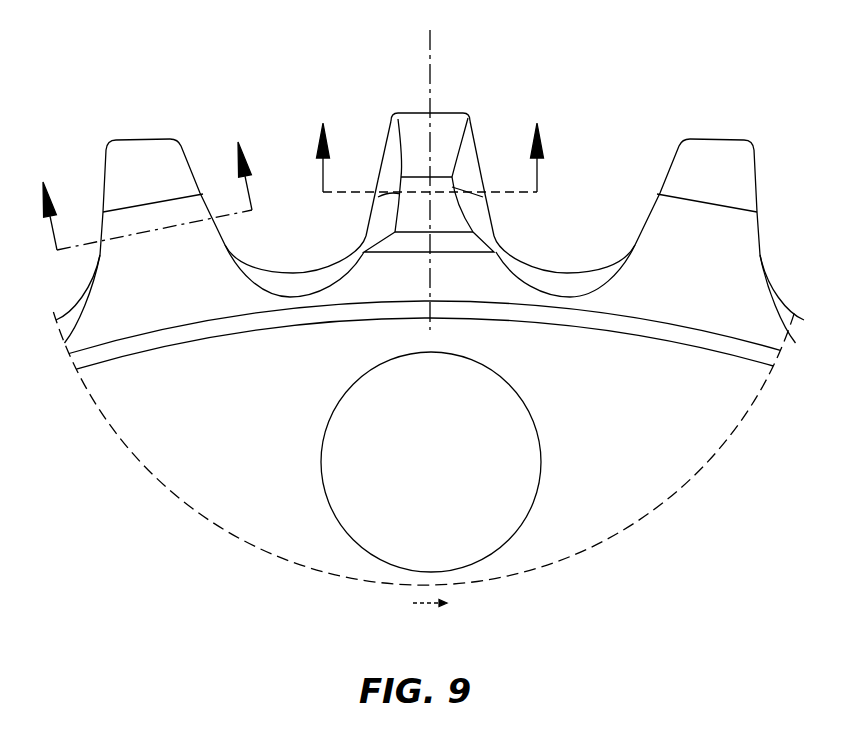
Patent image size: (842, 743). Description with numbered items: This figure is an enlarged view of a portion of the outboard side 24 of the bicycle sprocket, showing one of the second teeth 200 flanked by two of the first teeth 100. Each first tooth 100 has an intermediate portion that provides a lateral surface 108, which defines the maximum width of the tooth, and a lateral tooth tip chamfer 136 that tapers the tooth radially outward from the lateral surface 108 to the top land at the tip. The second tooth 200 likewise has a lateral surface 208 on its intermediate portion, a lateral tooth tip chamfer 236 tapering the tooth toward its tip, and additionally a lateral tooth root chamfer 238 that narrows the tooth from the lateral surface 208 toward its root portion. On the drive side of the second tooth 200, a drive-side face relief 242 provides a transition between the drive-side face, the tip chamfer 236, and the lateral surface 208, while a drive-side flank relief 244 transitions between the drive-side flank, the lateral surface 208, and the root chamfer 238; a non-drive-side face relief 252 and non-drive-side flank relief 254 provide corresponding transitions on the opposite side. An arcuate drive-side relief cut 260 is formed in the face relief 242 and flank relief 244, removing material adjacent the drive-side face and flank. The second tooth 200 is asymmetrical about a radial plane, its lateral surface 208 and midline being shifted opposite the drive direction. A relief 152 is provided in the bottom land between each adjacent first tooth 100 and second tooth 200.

The first teeth 100 is at (414, 333).
The lateral tooth tip chamfer 136 is at (145, 177).
The lateral surface 108 is at (140, 236).
The relief 152 is at (302, 280).
The outboard side 24 is at (583, 123).
The second teeth 200 is at (450, 200).
The lateral tooth tip chamfer 236 is at (417, 138).
The non-drive-side face relief 252 is at (388, 170).
The non-drive-side flank relief 254 is at (387, 210).
The drive-side face relief 242 is at (463, 167).
The drive-side flank relief 244 is at (468, 223).
The drive-side relief cut 260 is at (480, 203).
The lateral surface 208 is at (438, 212).
The lateral tooth root chamfer 238 is at (405, 243).